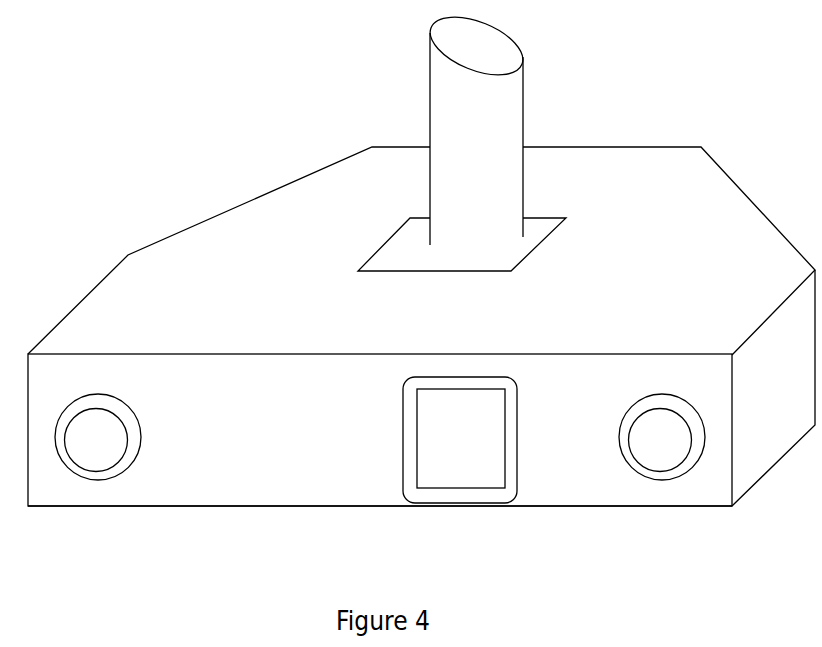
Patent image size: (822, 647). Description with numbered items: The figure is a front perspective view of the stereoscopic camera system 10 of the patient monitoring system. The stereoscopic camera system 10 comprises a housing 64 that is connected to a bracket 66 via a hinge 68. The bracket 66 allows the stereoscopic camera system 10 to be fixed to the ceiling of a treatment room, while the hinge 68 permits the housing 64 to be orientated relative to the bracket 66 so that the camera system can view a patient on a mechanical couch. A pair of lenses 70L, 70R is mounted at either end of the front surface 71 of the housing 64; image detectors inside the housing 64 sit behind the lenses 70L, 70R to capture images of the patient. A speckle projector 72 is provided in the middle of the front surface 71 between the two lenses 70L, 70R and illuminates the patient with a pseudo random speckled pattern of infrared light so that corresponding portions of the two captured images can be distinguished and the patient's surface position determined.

The stereoscopic camera system 10 is at (421, 300).
The housing 64 is at (748, 252).
The bracket 66 is at (512, 99).
The hinge 68 is at (541, 230).
The left lens 70L is at (130, 426).
The right lens 70R is at (621, 419).
The front surface 71 is at (541, 507).
The speckle projector 72 is at (491, 437).